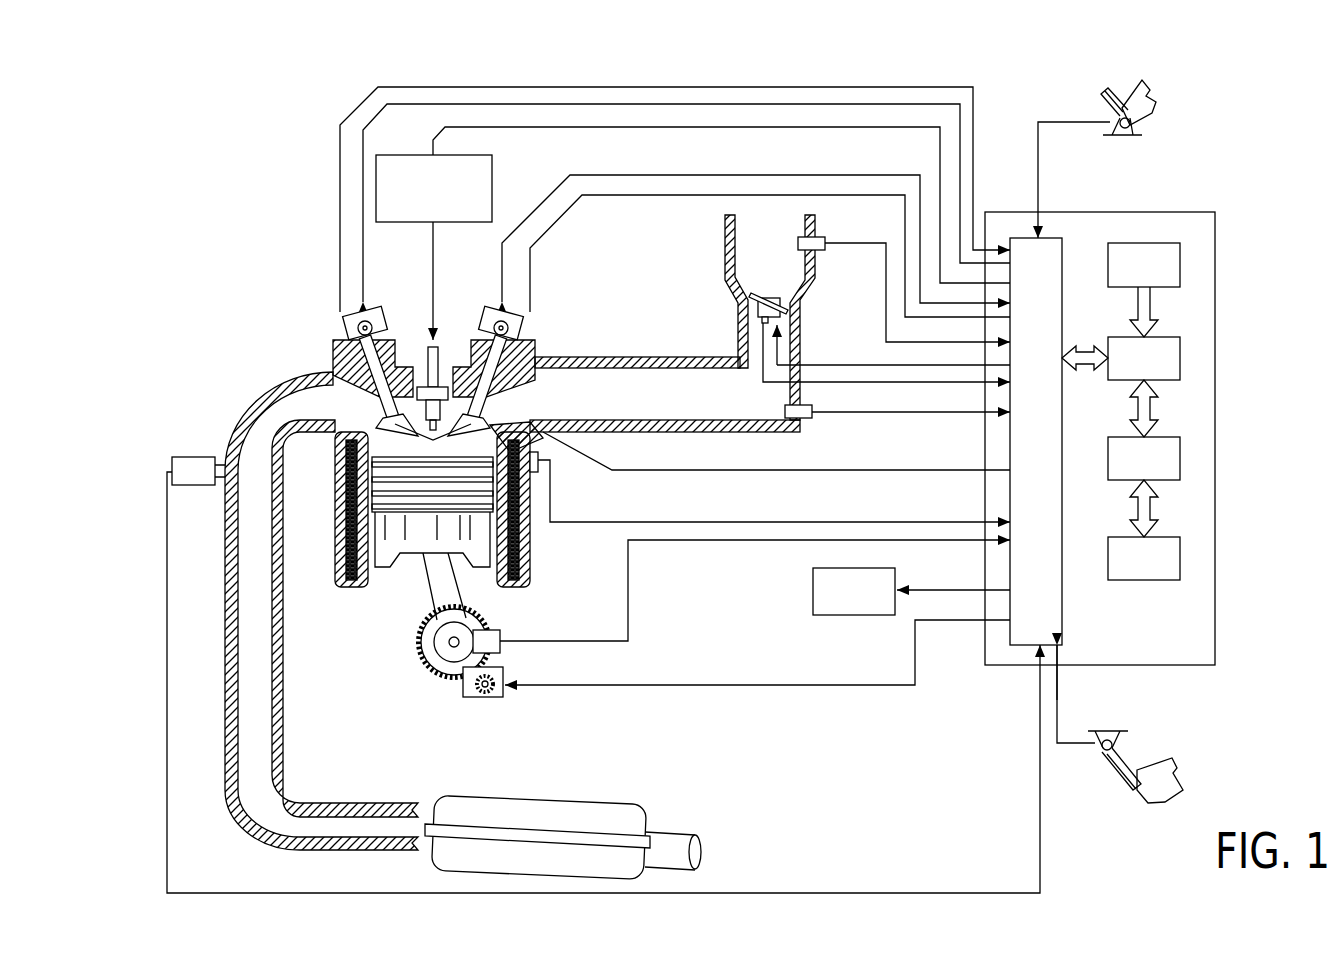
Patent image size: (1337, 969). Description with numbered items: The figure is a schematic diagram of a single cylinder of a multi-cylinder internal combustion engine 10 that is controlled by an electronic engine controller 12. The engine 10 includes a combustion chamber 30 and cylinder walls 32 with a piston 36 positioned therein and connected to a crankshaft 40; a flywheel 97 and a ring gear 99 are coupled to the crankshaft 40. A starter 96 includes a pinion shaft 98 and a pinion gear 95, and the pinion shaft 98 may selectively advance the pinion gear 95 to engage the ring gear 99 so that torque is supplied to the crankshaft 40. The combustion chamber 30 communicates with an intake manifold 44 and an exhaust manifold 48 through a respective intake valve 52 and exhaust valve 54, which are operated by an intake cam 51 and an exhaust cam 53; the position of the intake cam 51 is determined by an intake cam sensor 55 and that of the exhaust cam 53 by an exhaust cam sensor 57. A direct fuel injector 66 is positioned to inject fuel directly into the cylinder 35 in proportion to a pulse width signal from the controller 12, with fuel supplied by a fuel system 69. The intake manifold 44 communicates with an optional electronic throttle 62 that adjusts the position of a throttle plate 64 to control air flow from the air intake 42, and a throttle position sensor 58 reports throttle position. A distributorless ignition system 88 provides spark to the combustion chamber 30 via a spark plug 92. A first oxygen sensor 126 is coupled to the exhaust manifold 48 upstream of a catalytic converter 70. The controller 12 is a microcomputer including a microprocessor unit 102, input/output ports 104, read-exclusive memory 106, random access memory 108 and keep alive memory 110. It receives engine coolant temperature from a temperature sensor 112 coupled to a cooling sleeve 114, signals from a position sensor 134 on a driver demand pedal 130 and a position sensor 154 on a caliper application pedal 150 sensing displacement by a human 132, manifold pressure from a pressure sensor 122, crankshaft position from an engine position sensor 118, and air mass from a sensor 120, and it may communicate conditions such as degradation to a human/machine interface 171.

The internal combustion engine 10 is at (268, 293).
The electronic engine controller 12 is at (1216, 215).
The combustion chamber 30 is at (430, 440).
The cylinder walls 32 is at (368, 588).
The cylinder 35 is at (398, 580).
The piston 36 is at (415, 548).
The crankshaft 40 is at (440, 672).
The air intake 42 is at (753, 271).
The intake manifold 44 is at (691, 409).
The exhaust manifold 48 is at (282, 418).
The intake cam 51 is at (490, 312).
The intake valve 52 is at (477, 405).
The exhaust cam 53 is at (378, 312).
The exhaust valve 54 is at (384, 418).
The intake cam sensor 55 is at (513, 326).
The exhaust cam sensor 57 is at (354, 326).
The throttle position sensor 58 is at (752, 320).
The electronic throttle 62 is at (787, 302).
The throttle plate 64 is at (742, 309).
The direct fuel injector 66 is at (528, 440).
The fuel system 69 is at (520, 410).
The catalytic converter 70 is at (458, 800).
The distributorless ignition system 88 is at (390, 155).
The spark plug 92 is at (438, 350).
The pinion gear 95 is at (487, 703).
The starter 96 is at (503, 695).
The flywheel 97 is at (418, 648).
The pinion shaft 98 is at (478, 700).
The ring gear 99 is at (452, 682).
The microprocessor unit 102 is at (1180, 363).
The input/output ports 104 is at (1063, 248).
The read-exclusive memory 106 is at (1180, 268).
The random access memory 108 is at (1180, 462).
The keep alive memory 110 is at (1180, 565).
The temperature sensor 112 is at (538, 474).
The cooling sleeve 114 is at (515, 556).
The engine position sensor 118 is at (500, 634).
The air mass sensor 120 is at (825, 248).
The pressure sensor 122 is at (810, 418).
The first oxygen sensor 126 is at (172, 463).
The driver demand pedal 130 is at (1106, 103).
The human 132 is at (1152, 86).
The position sensor 134 is at (1135, 122).
The caliper application pedal 150 is at (1130, 790).
The position sensor 154 is at (1096, 738).
The human/machine interface 171 is at (911, 591).